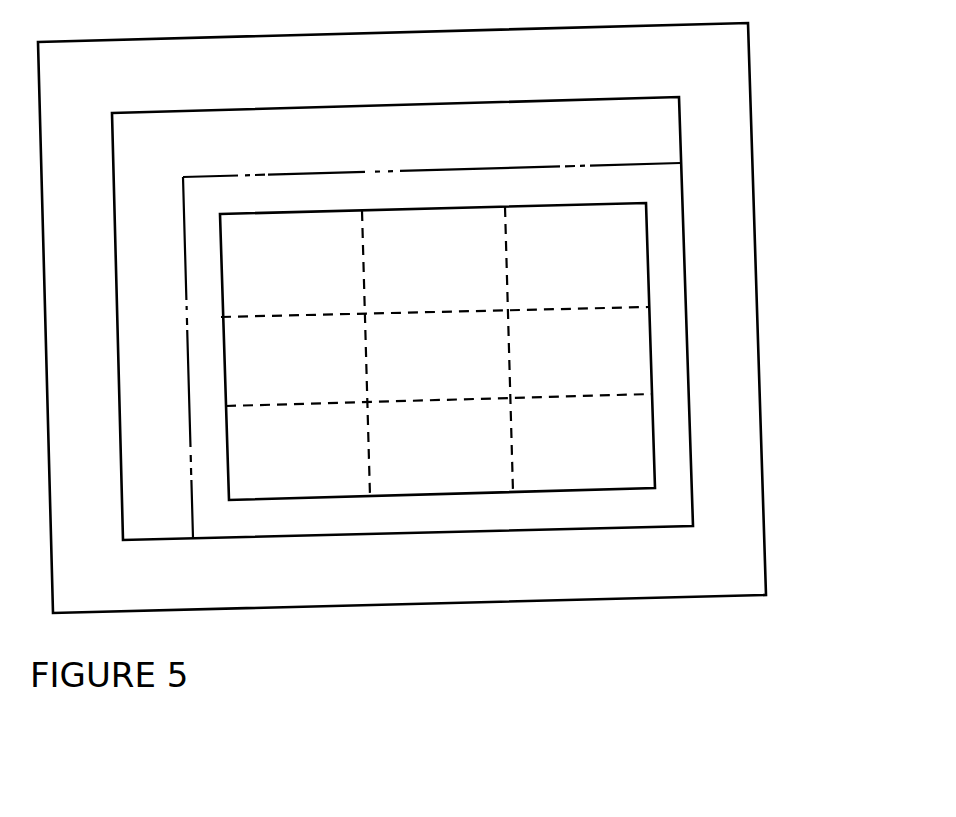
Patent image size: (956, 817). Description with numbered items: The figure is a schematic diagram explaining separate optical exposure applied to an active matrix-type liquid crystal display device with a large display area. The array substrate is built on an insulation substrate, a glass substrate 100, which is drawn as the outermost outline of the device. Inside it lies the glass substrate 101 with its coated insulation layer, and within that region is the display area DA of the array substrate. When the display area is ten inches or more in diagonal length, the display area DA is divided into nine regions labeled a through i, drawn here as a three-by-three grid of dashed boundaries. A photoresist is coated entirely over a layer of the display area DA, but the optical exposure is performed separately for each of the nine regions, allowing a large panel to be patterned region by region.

The glass substrate 100 is at (728, 336).
The glass substrate 101 is at (684, 240).
The display area DA is at (649, 212).